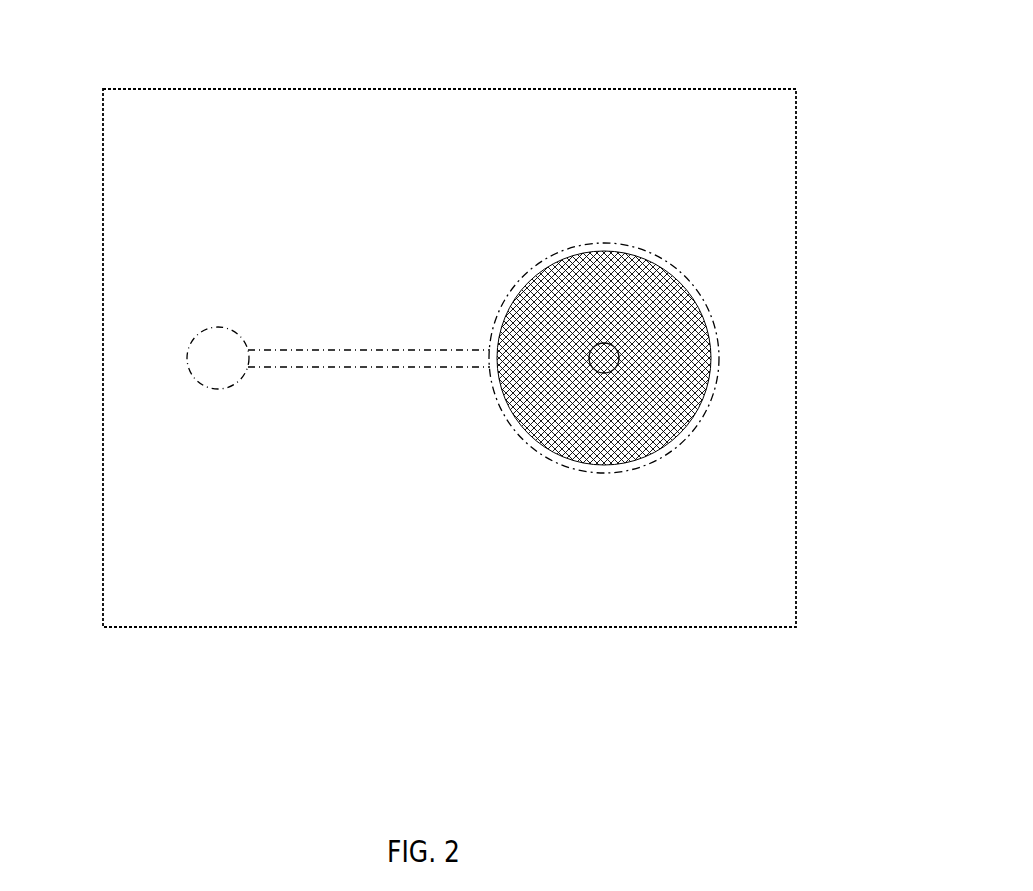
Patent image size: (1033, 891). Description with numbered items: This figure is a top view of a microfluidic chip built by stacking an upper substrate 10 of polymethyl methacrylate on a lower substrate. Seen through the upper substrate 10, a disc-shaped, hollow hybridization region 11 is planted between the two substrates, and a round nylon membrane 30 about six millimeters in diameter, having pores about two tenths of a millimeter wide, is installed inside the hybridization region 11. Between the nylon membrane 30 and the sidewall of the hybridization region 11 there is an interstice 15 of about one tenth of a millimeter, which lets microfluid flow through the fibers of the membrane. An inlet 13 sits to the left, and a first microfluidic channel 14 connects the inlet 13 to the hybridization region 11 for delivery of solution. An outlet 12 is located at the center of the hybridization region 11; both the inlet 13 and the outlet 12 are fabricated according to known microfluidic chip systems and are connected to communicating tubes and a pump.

The upper substrate 10 is at (812, 190).
The hybridization region 11 is at (668, 456).
The outlet 12 is at (617, 355).
The inlet 13 is at (209, 357).
The first microfluidic channel 14 is at (335, 364).
The interstice 15 is at (704, 411).
The nylon membrane 30 is at (588, 243).